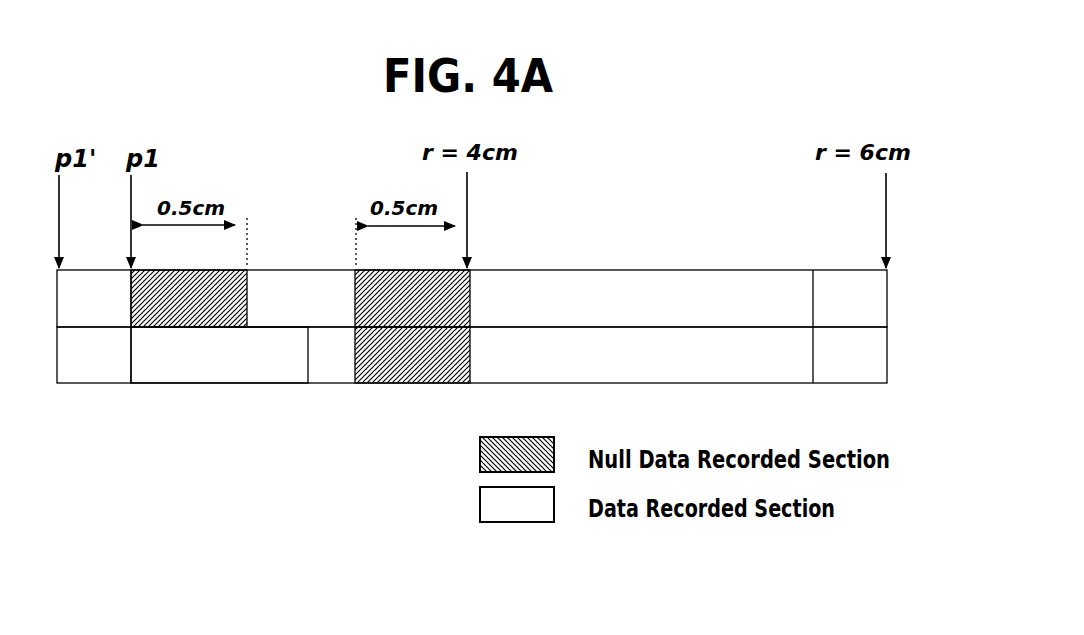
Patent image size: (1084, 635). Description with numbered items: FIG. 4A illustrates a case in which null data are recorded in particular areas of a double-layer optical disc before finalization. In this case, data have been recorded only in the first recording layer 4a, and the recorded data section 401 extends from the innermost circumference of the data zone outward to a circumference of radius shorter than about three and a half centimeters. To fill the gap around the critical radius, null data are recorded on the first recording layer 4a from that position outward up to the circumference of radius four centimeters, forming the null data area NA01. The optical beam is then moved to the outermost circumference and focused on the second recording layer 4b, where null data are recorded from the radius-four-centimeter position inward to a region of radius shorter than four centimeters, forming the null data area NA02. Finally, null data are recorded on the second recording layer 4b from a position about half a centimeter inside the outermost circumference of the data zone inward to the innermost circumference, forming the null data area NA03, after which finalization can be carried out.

The first recording layer 4a is at (896, 357).
The second recording layer 4b is at (896, 295).
The recorded data section 401 is at (139, 373).
The null data area NA01 is at (415, 370).
The null data area NA02 is at (455, 298).
The null data area NA03 is at (230, 295).